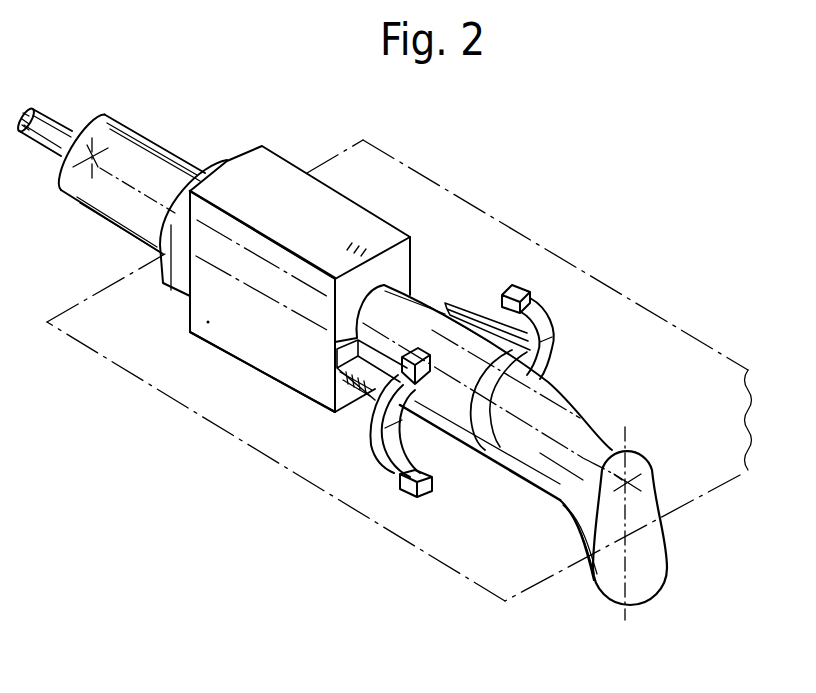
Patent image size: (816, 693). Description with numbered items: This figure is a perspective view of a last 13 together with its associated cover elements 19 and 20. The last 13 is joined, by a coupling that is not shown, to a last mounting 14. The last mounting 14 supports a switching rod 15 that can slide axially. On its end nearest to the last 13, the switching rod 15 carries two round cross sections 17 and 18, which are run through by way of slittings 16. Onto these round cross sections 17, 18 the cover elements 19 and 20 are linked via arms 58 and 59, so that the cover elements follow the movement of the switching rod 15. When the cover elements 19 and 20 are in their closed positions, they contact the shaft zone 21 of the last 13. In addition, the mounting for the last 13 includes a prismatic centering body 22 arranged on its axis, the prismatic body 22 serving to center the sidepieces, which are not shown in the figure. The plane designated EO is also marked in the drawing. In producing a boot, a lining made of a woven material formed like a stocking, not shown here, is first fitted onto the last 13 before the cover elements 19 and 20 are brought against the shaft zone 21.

The last 13 is at (573, 430).
The last mounting 14 is at (135, 157).
The switching rod 15 is at (47, 122).
The slittings 16 is at (360, 343).
The round cross section 17 is at (445, 312).
The round cross section 18 is at (340, 372).
The cover element 19 is at (527, 296).
The cover element 20 is at (423, 487).
The shaft zone 21 is at (485, 452).
The prismatic body 22 is at (207, 322).
The arm 58 is at (485, 322).
The arm 59 is at (363, 402).
The reference plane EO is at (715, 382).